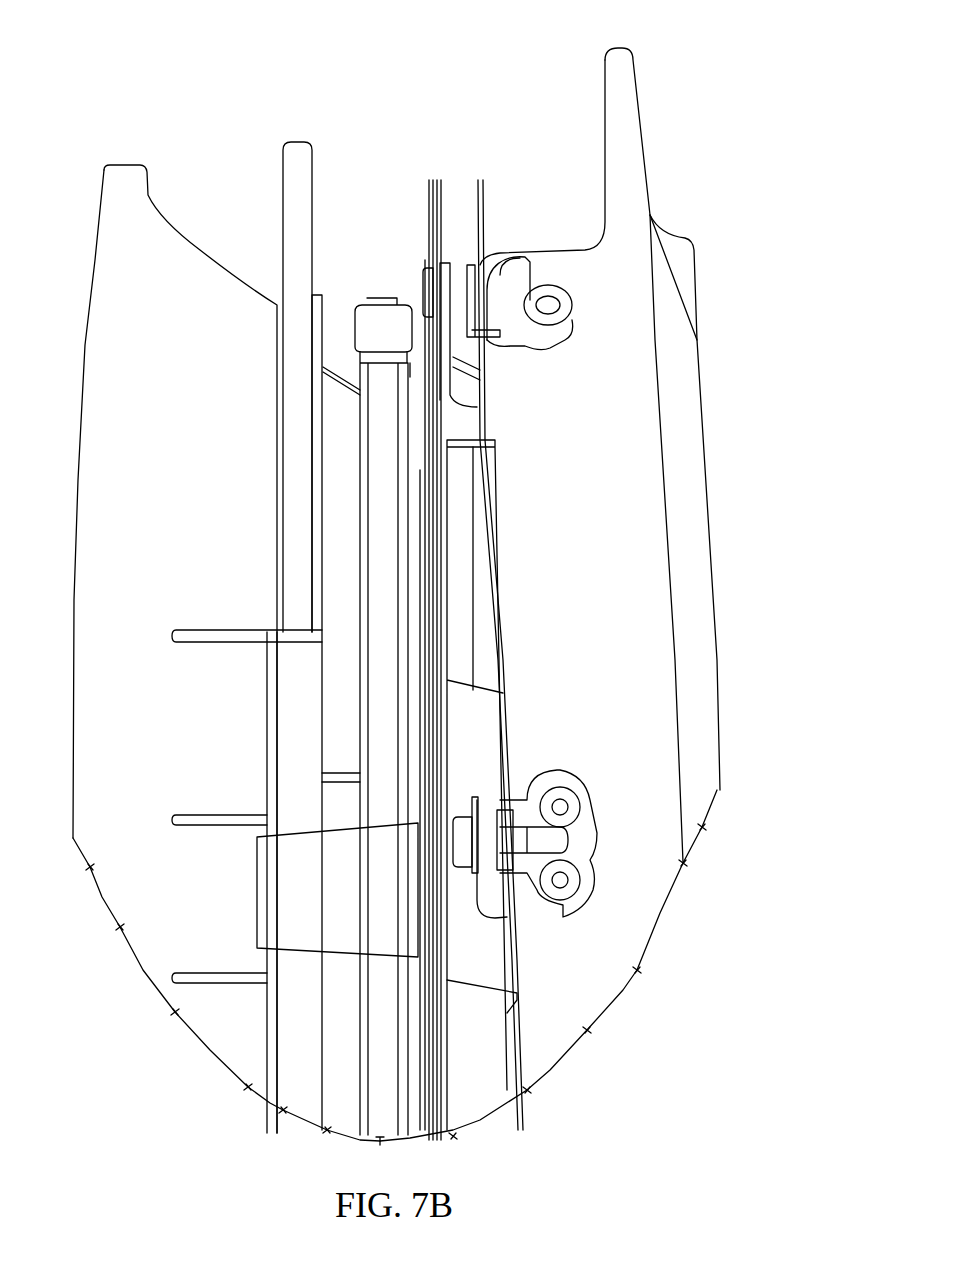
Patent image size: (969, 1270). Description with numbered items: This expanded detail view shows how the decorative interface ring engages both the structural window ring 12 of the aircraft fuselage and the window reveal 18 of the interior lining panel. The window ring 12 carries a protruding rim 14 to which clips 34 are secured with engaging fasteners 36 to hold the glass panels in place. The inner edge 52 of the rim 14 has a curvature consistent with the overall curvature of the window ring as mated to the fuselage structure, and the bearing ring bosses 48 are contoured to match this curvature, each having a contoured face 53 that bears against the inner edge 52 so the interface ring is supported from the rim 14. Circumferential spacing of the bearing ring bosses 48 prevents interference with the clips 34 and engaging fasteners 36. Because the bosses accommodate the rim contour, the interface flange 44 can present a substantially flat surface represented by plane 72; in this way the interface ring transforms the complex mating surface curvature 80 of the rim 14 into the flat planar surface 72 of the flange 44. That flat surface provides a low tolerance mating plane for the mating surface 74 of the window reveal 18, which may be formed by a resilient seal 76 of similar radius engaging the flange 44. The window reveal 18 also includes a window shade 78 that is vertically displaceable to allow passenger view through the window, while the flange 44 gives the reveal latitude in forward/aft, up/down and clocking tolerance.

The window ring 12 is at (683, 563).
The protruding rim 14 is at (565, 267).
The window reveal 18 is at (133, 177).
The clip 34 is at (500, 907).
The engaging fastener 36 is at (560, 833).
The interface flange 44 is at (440, 420).
The bearing ring boss 48 is at (473, 620).
The inner edge 52 is at (503, 630).
The contoured face 53 is at (497, 553).
The plane 72 is at (430, 233).
The mating surface 74 is at (425, 493).
The resilient seal 76 is at (417, 797).
The window shade 78 is at (293, 140).
The mating surface curvature 80 is at (480, 205).